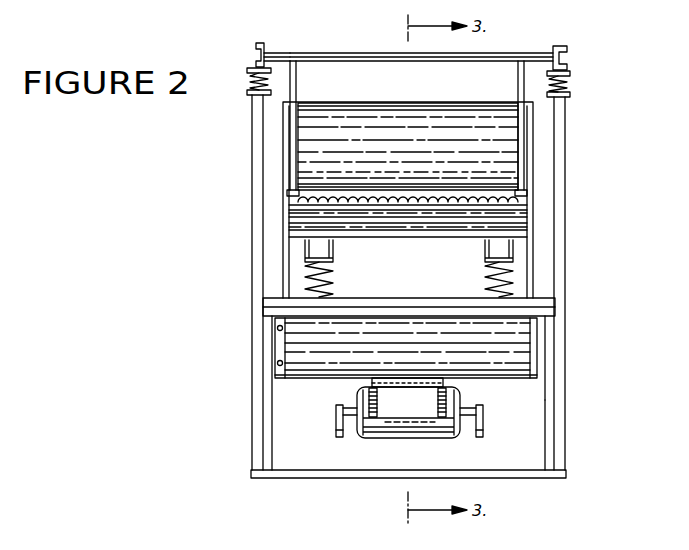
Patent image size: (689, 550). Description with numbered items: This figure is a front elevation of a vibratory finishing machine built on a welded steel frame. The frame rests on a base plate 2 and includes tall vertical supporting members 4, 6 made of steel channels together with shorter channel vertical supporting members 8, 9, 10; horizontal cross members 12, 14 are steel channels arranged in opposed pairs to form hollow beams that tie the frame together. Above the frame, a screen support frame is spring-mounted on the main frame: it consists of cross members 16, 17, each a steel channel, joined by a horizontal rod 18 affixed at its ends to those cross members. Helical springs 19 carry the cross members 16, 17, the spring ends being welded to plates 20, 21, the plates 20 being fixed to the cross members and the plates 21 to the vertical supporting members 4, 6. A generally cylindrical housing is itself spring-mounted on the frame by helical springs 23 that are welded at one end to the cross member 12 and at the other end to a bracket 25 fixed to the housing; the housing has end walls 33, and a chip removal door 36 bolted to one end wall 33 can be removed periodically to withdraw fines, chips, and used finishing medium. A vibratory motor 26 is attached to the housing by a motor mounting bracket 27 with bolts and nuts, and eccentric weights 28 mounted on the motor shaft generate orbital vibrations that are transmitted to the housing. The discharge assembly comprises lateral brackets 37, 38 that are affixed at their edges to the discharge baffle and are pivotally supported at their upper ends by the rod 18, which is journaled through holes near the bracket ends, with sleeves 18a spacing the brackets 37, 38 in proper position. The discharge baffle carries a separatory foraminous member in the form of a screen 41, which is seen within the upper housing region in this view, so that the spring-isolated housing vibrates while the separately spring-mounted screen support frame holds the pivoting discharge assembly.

The base plate 2 is at (315, 475).
The vertical supporting member 4 is at (252, 172).
The vertical supporting member 6 is at (565, 352).
The vertical supporting member 8 is at (267, 362).
The vertical supporting member 9 is at (547, 400).
The vertical supporting member 10 is at (550, 455).
The horizontal cross member 12 is at (272, 302).
The horizontal cross member 14 is at (272, 312).
The cross member 16 is at (258, 44).
The cross member 17 is at (567, 50).
The horizontal rod 18 is at (330, 54).
The sleeve 18a is at (283, 51).
The helical spring 19 is at (570, 83).
The plate 20 is at (250, 72).
The plate 21 is at (250, 93).
The helical spring 23 is at (335, 283).
The bracket 25 is at (333, 251).
The vibratory motor 26 is at (408, 430).
The motor mounting bracket 27 is at (430, 378).
The eccentric weight 28 is at (338, 432).
The end wall 33 is at (283, 262).
The chip removal door 36 is at (278, 345).
The lateral bracket 37 is at (298, 91).
The lateral bracket 38 is at (522, 135).
The screen 41 is at (500, 200).